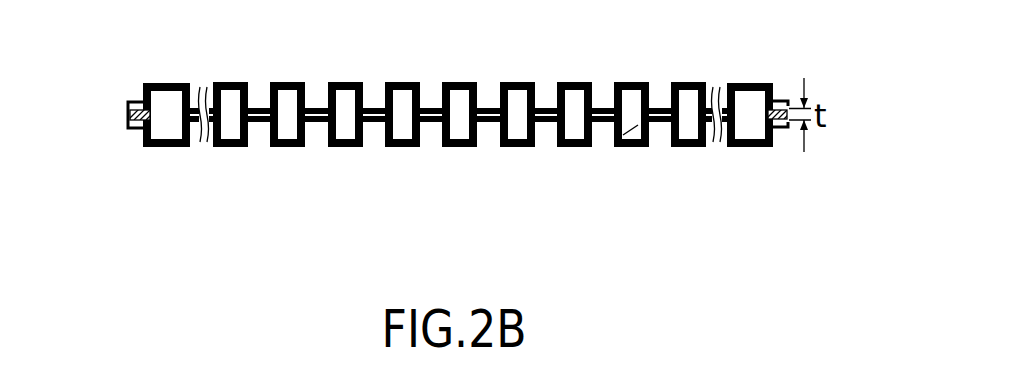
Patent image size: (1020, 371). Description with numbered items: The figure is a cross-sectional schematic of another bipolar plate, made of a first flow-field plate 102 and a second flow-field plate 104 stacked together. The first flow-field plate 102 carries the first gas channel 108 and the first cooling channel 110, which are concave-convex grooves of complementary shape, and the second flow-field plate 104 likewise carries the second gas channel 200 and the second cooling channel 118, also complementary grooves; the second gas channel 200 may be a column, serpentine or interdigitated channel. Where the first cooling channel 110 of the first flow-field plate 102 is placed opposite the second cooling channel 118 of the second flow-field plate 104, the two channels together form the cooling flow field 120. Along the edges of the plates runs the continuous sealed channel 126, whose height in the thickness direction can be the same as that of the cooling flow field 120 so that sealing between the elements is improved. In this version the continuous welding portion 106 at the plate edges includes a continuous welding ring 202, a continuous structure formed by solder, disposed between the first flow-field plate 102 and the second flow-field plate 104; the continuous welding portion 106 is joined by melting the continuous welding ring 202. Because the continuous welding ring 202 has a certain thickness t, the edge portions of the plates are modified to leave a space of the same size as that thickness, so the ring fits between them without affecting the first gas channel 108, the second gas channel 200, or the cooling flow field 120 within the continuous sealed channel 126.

The first flow-field plate 102 is at (785, 102).
The second flow-field plate 104 is at (781, 147).
The continuous welding portion 106 is at (130, 120).
The first gas channel 108 is at (373, 92).
The first cooling channel 110 is at (632, 102).
The second cooling channel 118 is at (623, 137).
The cooling flow field 120 is at (227, 133).
The continuous sealed channel 126 is at (753, 82).
The second gas channel 200 is at (487, 133).
The continuous welding ring 202 is at (130, 113).